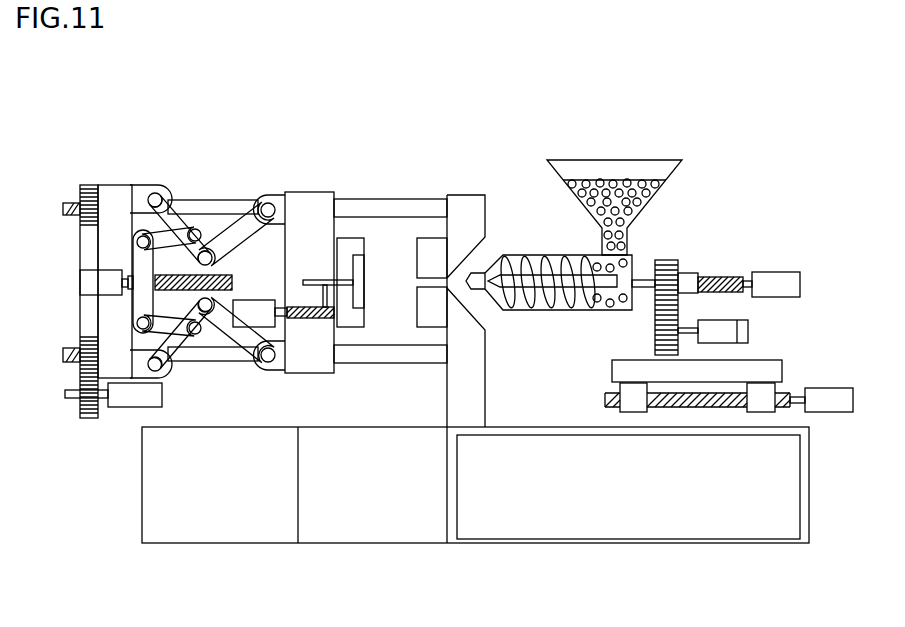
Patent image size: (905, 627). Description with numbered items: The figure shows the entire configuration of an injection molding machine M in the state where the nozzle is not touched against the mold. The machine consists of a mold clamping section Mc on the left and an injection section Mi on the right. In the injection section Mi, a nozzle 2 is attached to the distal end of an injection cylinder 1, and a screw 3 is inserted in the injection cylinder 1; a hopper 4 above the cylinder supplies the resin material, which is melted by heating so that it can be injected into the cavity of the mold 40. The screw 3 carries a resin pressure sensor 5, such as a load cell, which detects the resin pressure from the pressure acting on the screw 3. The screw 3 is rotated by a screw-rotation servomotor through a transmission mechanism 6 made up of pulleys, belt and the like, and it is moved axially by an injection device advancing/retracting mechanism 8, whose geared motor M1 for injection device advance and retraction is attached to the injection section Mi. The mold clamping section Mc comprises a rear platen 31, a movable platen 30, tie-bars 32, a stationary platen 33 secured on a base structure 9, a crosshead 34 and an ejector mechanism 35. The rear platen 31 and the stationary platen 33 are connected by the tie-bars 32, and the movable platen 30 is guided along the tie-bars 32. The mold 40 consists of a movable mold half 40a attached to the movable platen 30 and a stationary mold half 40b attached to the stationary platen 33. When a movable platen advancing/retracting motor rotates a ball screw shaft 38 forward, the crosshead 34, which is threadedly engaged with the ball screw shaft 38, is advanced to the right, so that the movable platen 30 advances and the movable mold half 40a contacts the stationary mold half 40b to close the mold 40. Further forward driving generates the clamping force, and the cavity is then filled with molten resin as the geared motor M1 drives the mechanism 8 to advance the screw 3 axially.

The injection cylinder 1 is at (508, 255).
The nozzle 2 is at (480, 295).
The screw 3 is at (528, 300).
The hopper 4 is at (648, 160).
The resin pressure sensor 5 is at (693, 273).
The transmission mechanism 6 is at (672, 260).
The injection device advancing/retracting mechanism 8 is at (630, 413).
The base structure 9 is at (405, 543).
The movable platen 30 is at (307, 192).
The rear platen 31 is at (120, 378).
The tie-bars 32 is at (353, 199).
The stationary platen 33 is at (467, 195).
The crosshead 34 is at (148, 257).
The ejector mechanism 35 is at (238, 328).
The ball screw shaft 38 is at (80, 278).
The mold 40 is at (387, 279).
The movable mold half 40a is at (347, 328).
The stationary mold half 40b is at (438, 328).
The mold clamping section Mc is at (127, 132).
The injection section Mi is at (606, 136).
The injection molding machine M is at (744, 194).
The geared motor for injection device advance and retraction M1 is at (832, 388).